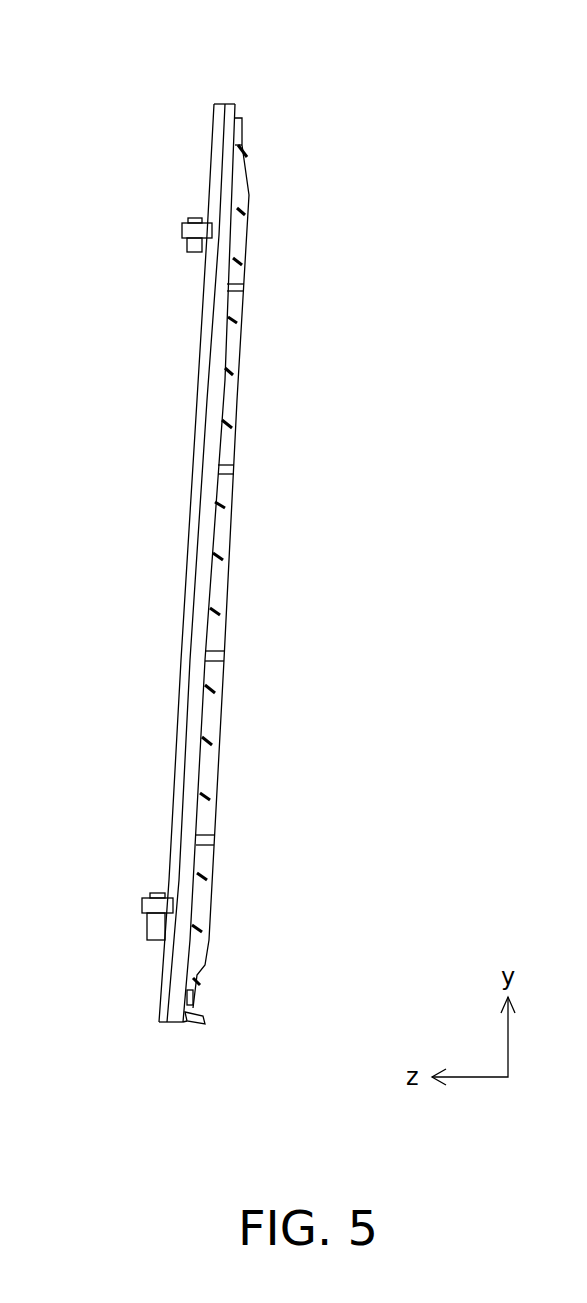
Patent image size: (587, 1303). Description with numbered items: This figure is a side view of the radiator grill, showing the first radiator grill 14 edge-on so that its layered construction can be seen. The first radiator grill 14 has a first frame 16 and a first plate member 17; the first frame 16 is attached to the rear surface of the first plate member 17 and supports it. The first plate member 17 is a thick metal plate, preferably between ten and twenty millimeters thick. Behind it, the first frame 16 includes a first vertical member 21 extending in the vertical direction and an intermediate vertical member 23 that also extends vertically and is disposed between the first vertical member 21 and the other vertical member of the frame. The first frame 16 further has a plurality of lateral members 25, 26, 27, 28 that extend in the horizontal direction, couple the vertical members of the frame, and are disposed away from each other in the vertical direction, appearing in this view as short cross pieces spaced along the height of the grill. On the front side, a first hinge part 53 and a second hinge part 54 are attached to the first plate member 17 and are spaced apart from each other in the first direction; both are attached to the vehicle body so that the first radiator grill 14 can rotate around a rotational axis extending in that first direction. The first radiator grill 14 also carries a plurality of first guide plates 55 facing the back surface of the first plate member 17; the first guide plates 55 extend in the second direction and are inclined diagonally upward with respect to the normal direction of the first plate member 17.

The first radiator grill 14 is at (243, 82).
The first frame 16 is at (247, 400).
The first plate member 17 is at (193, 428).
The first vertical member 21 is at (217, 350).
The intermediate vertical member 23 is at (223, 533).
The lateral member 25 is at (230, 288).
The lateral member 26 is at (218, 468).
The lateral member 27 is at (208, 658).
The lateral member 28 is at (198, 842).
The first hinge part 53 is at (182, 232).
The second hinge part 54 is at (142, 908).
The first guide plate 55 is at (212, 610).